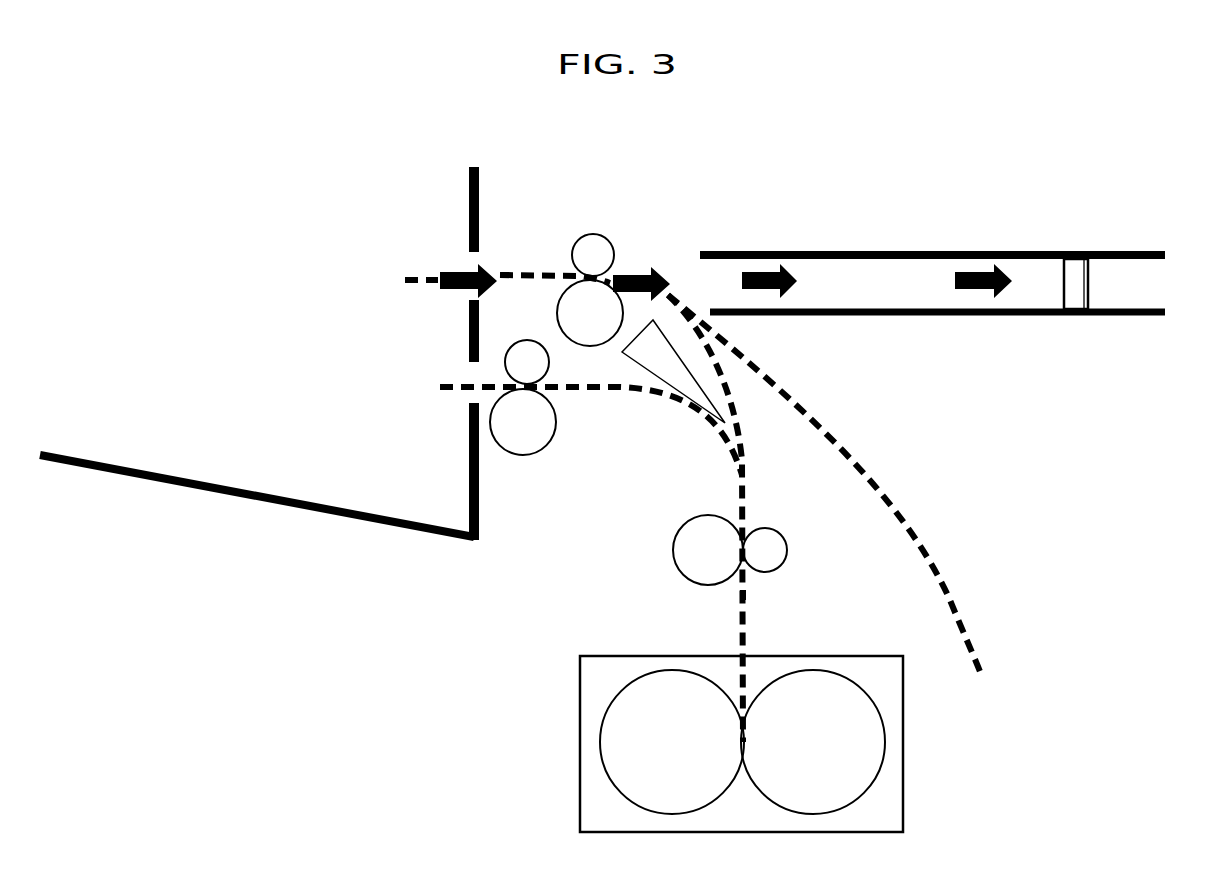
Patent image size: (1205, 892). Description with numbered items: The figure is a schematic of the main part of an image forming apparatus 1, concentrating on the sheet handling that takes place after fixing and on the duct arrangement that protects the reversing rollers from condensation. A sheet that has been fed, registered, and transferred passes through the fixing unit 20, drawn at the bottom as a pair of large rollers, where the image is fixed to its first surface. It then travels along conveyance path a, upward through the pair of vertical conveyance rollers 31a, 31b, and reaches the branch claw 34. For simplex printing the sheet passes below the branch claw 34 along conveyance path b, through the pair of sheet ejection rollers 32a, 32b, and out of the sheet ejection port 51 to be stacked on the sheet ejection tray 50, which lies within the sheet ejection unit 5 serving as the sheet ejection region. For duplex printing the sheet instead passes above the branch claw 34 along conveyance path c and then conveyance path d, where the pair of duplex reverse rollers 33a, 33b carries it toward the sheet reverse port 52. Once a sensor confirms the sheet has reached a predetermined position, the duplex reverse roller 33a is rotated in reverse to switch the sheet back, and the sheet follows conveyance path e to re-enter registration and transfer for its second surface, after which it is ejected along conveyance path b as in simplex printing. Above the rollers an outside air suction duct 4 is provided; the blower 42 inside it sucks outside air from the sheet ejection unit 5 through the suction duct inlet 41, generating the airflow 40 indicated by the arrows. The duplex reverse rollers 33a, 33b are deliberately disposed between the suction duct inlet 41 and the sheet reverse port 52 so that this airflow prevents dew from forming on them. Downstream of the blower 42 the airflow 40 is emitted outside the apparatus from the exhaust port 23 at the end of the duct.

The image forming apparatus 1 is at (156, 236).
The sheet ejection unit 5 is at (358, 220).
The outside air suction duct 4 is at (917, 281).
The fixing unit 20 is at (905, 798).
The exhaust port 23 is at (1168, 258).
The vertical conveyance roller 31a is at (688, 527).
The vertical conveyance roller 31b is at (790, 552).
The sheet ejection roller 32a is at (524, 456).
The sheet ejection roller 32b is at (526, 340).
The duplex reverse roller 33a is at (580, 348).
The duplex reverse roller 33b is at (600, 236).
The branch claw 34 is at (712, 403).
The airflow 40 is at (978, 296).
The suction duct inlet 41 is at (700, 258).
The blower 42 is at (1081, 314).
The sheet ejection tray 50 is at (327, 513).
The sheet ejection port 51 is at (467, 398).
The sheet reverse port 52 is at (469, 256).
The conveyance path a is at (743, 598).
The conveyance path b is at (706, 428).
The conveyance path c is at (745, 452).
The conveyance path d is at (535, 268).
The conveyance path e is at (875, 487).